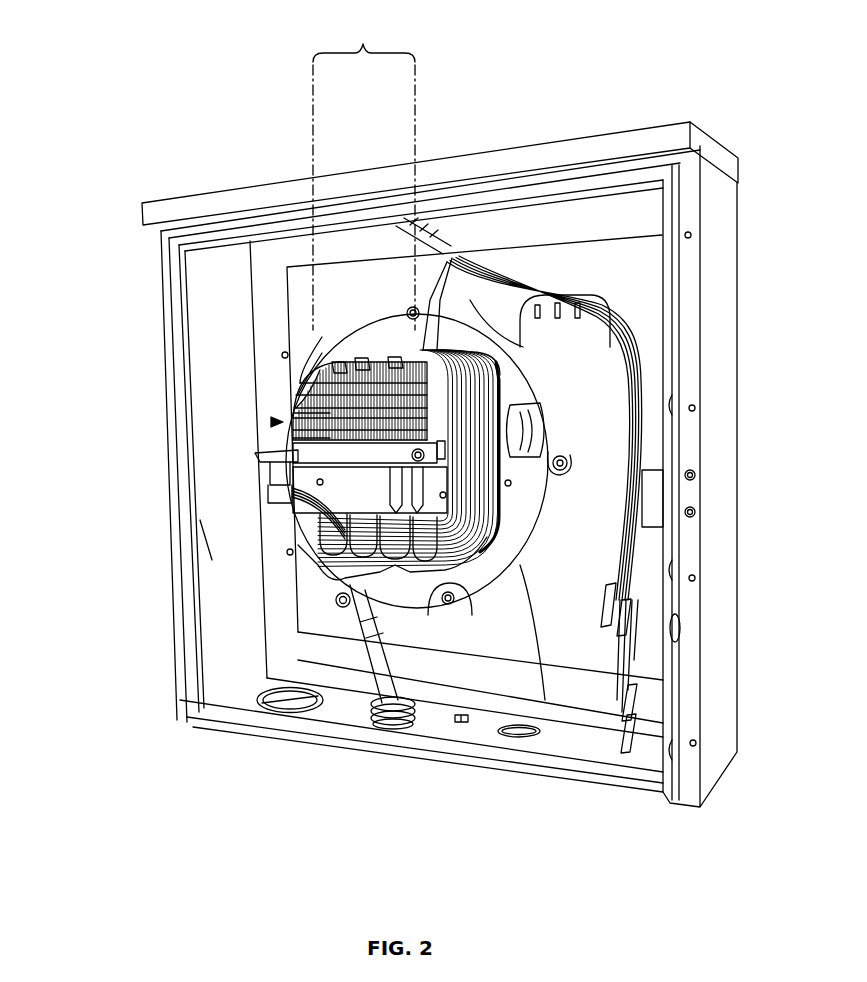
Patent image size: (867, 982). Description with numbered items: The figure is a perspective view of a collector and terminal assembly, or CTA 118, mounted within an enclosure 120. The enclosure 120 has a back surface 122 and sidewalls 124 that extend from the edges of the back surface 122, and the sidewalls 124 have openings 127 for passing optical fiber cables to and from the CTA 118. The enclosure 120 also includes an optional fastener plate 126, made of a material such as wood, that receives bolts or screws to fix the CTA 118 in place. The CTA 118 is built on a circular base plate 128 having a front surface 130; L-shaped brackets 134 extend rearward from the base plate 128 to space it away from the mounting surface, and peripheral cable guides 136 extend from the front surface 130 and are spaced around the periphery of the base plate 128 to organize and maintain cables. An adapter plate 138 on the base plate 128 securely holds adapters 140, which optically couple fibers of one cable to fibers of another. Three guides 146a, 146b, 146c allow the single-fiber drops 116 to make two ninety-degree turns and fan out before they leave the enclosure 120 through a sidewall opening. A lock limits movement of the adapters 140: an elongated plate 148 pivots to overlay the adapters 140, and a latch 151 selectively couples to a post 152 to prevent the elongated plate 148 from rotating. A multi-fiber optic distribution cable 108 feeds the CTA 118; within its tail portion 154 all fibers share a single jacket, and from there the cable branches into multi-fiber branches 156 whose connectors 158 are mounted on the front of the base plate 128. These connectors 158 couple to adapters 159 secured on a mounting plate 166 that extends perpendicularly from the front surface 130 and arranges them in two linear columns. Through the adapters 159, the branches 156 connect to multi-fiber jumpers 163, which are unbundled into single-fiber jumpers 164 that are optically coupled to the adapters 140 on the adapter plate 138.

The multi-fiber optic distribution cable 108 is at (262, 717).
The single-fiber drops 116 is at (463, 262).
The collector and terminal assembly (CTA) 118 is at (273, 422).
The enclosure 120 is at (128, 216).
The back surface 122 is at (190, 693).
The sidewalls 124 is at (605, 178).
The fastener plate 126 is at (505, 605).
The openings 127 is at (363, 712).
The base plate 128 is at (580, 555).
The front surface 130 is at (483, 635).
The brackets 134 is at (407, 316).
The peripheral cable guides 136 is at (293, 610).
The adapter plate 138 is at (305, 520).
The adapters 140 is at (322, 337).
The guide 146a is at (313, 557).
The guide 146b is at (528, 565).
The guide 146c is at (477, 277).
The elongated plate 148 is at (293, 450).
The latch 151 is at (545, 443).
The post 152 is at (548, 420).
The tail portion 154 is at (262, 715).
The multi-fiber branches 156 is at (293, 413).
The connectors 158 is at (293, 438).
The adapters 159 is at (262, 492).
The multi-fiber jumpers 163 is at (213, 531).
The single-fiber jumpers 164 is at (396, 292).
The mounting plate 166 is at (258, 457).